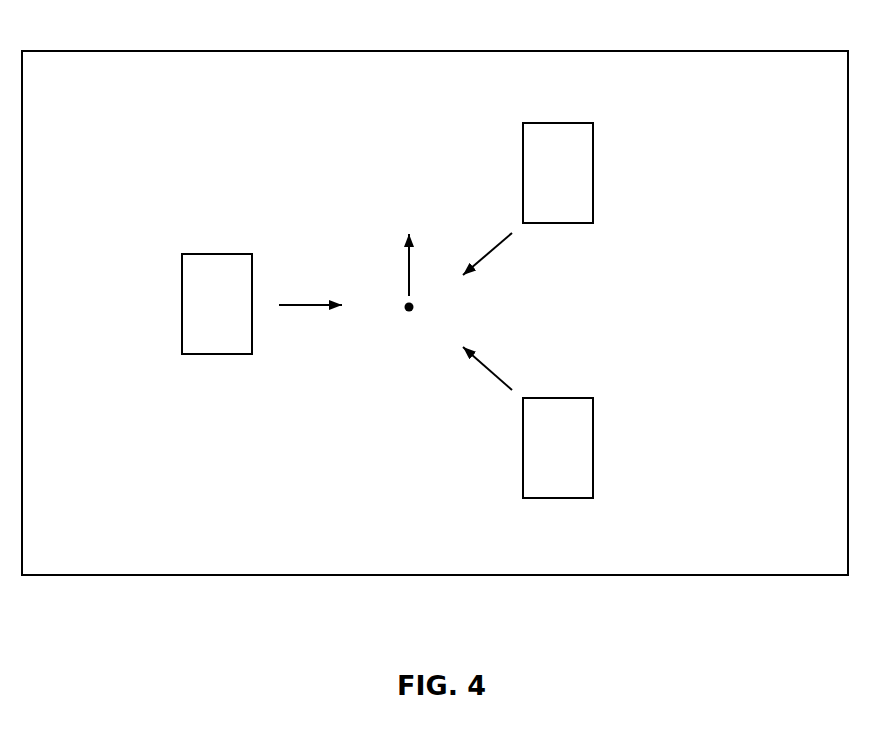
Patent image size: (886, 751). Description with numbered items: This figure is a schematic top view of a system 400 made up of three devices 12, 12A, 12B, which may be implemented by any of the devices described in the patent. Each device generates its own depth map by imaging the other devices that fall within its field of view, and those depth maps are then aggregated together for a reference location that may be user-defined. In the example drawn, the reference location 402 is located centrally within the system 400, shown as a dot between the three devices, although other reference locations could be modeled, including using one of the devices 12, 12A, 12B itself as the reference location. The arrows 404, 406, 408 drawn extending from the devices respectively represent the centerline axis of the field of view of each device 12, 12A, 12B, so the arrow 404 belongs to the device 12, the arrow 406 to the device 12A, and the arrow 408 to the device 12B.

The system 400 is at (317, 178).
The device 12 is at (193, 253).
The device 12A is at (594, 144).
The device 12B is at (594, 425).
The reference location 402 is at (407, 313).
The arrow 404 is at (300, 307).
The arrow 406 is at (493, 252).
The arrow 408 is at (487, 372).